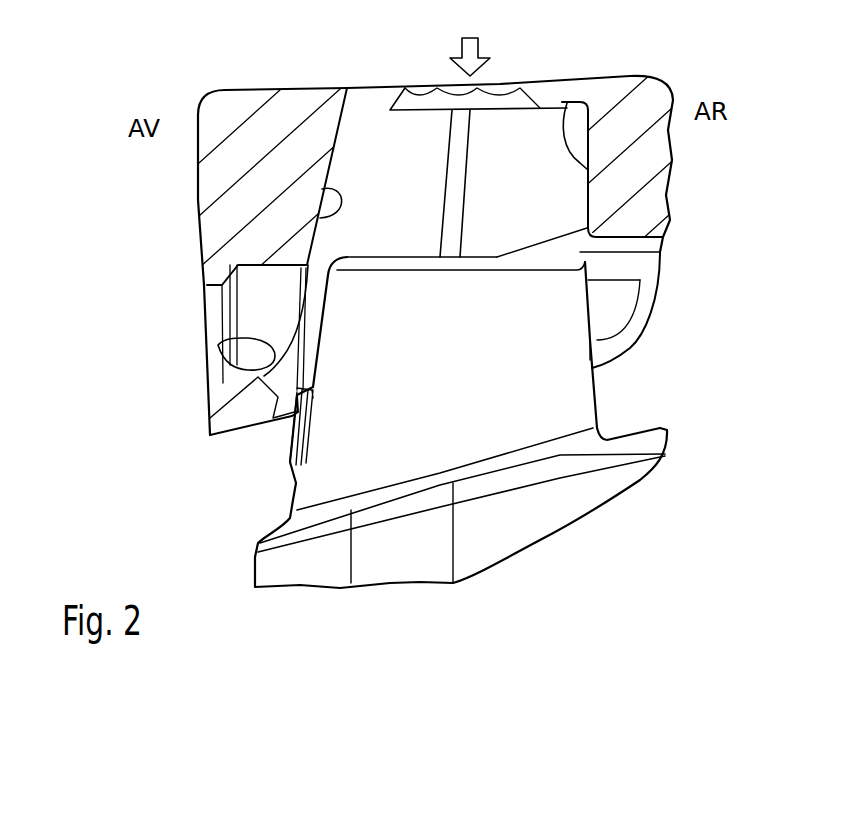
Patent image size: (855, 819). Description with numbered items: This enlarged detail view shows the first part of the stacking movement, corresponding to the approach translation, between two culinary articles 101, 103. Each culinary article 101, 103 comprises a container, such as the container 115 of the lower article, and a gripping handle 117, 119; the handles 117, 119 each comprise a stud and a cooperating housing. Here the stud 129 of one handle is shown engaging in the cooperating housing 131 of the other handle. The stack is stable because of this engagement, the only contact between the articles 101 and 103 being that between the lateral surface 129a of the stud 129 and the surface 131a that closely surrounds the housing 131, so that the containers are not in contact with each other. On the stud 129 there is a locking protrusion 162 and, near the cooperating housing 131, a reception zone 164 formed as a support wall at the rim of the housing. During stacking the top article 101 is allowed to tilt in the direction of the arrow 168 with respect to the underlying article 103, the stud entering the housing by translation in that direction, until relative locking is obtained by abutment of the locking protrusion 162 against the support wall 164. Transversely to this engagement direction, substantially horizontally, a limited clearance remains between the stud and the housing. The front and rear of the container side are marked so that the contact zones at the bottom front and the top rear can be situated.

The culinary article 101 is at (195, 266).
The culinary article 103 is at (544, 548).
The container 115 is at (40, 0).
The gripping handle 117 is at (298, 124).
The gripping handle 119 is at (325, 557).
The stud 129 is at (364, 453).
The lateral surface of the stud 129a is at (537, 362).
The cooperating housing 131 is at (436, 179).
The surface surrounding the housing 131a is at (322, 217).
The locking protrusion 162 is at (290, 457).
The reception zone (support wall) 164 is at (218, 345).
The arrow 168 is at (466, 48).